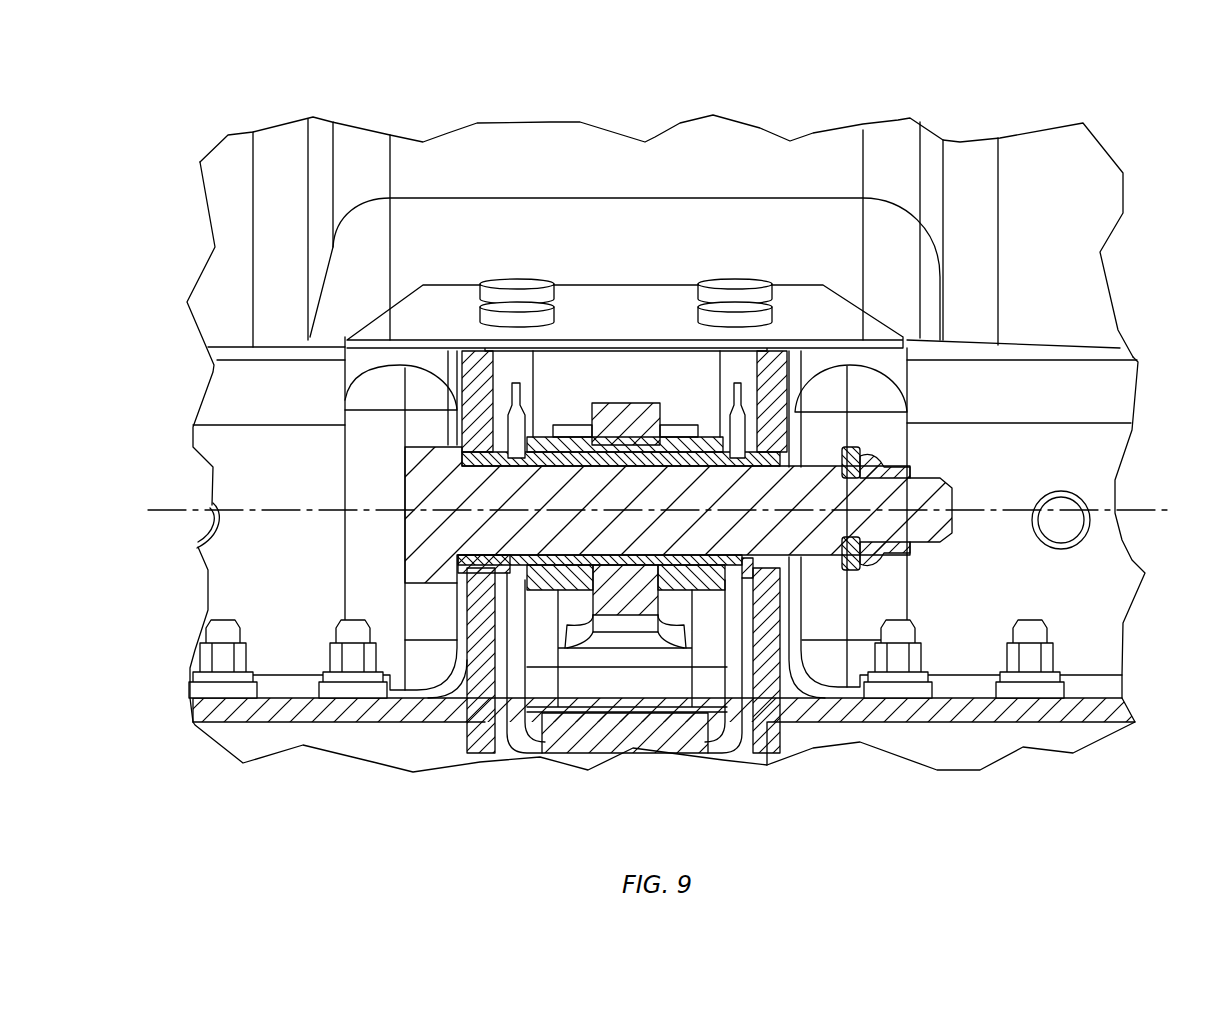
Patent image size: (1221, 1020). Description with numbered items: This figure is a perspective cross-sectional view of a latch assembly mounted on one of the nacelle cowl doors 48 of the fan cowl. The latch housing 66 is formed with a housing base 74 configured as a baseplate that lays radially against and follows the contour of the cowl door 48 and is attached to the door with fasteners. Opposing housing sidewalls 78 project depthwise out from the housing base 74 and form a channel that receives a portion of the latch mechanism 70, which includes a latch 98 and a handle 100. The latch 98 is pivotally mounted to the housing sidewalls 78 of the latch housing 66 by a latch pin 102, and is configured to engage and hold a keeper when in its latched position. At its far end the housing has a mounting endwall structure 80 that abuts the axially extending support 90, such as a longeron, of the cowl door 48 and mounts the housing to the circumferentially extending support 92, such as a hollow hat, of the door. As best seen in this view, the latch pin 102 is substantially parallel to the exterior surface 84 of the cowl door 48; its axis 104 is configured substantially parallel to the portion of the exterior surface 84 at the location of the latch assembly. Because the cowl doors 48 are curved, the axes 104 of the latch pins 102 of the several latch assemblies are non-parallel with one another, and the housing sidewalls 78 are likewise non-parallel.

The cowl door 48 is at (1128, 152).
The circumferentially extending support 92 is at (893, 148).
The latch housing 66 is at (890, 300).
The mounting endwall structure 80 is at (605, 310).
The latch mechanism 70 is at (682, 396).
The housing sidewalls 78 is at (465, 430).
The latch pin 102 is at (943, 477).
The axially extending support 90 is at (1118, 547).
The axis 104 is at (168, 512).
The housing base 74 is at (225, 708).
The exterior surface 84 is at (320, 742).
The latch 98 is at (613, 615).
The handle 100 is at (742, 746).